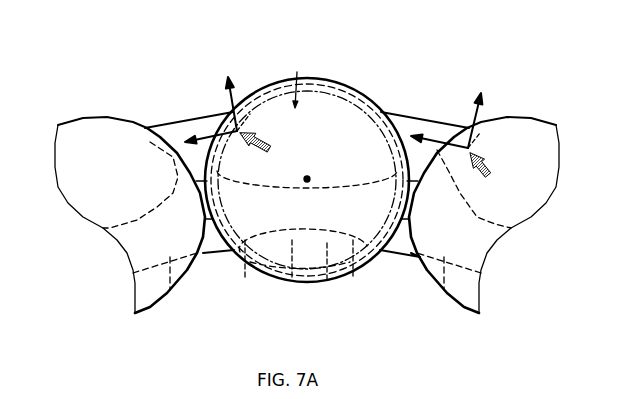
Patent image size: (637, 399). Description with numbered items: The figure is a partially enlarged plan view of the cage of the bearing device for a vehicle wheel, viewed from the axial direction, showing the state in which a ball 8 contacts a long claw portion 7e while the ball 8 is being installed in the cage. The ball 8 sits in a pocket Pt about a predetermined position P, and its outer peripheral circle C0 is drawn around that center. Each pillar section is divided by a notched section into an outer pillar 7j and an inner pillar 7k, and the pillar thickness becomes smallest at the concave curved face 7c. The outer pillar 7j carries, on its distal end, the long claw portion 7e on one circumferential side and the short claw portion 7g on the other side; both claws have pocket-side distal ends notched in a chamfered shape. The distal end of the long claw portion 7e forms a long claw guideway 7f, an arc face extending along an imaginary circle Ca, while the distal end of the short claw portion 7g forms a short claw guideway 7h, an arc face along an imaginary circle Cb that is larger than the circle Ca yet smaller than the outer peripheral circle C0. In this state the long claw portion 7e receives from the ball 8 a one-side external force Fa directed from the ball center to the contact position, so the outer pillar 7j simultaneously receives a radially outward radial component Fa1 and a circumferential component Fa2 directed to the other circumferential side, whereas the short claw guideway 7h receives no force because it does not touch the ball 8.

The ball 8 is at (67, 123).
The concave curved face 7c is at (174, 298).
The short claw portion 7g is at (146, 123).
The outer pillar 7j is at (208, 117).
The inner pillar 7k is at (216, 258).
The long claw portion 7e is at (243, 100).
The short claw guideway 7h is at (150, 141).
The long claw guideway 7f is at (248, 132).
The outer peripheral circle C0 is at (257, 272).
The imaginary circle Cb is at (323, 283).
The imaginary circle Ca is at (353, 277).
The predetermined position P is at (310, 184).
The pocket Pt is at (293, 80).
The one-side external force Fa is at (266, 151).
The radial component Fa1 is at (227, 73).
The circumferential component Fa2 is at (183, 134).